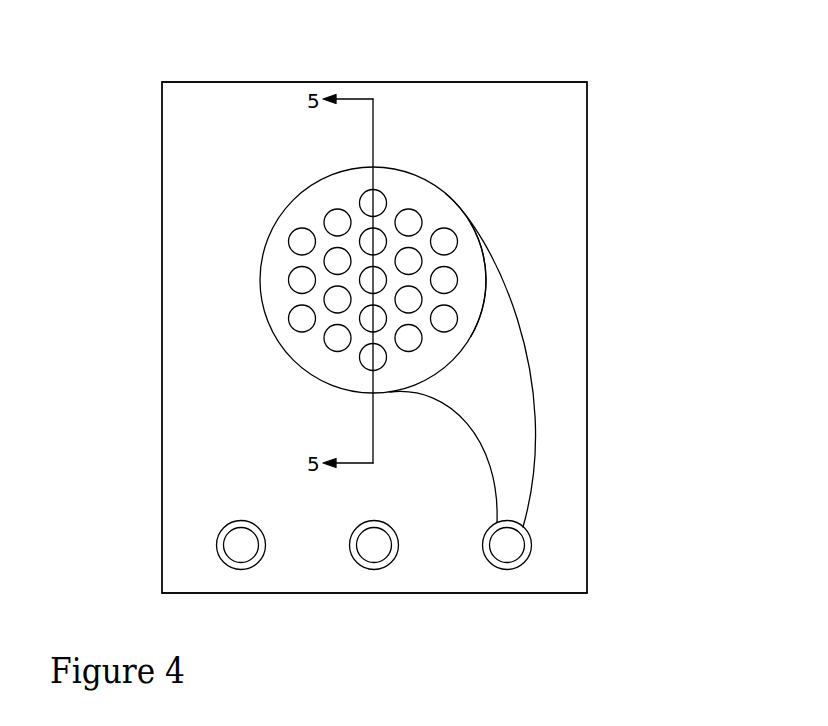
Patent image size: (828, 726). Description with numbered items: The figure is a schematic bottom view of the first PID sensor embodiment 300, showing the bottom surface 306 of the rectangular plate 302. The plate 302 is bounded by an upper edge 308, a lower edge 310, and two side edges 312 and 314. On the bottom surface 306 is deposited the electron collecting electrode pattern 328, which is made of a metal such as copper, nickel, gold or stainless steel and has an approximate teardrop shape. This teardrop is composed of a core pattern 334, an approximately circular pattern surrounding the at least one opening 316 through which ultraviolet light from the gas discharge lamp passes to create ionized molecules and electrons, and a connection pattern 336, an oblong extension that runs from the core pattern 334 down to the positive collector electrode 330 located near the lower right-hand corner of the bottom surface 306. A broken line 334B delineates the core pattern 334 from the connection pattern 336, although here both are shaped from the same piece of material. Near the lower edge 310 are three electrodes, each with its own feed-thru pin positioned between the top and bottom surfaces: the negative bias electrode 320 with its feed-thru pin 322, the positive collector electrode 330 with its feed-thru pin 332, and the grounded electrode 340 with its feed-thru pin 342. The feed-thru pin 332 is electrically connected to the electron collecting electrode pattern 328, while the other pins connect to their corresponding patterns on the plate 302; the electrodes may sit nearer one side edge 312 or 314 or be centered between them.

The first PID sensor embodiment 300 is at (141, 66).
The plate 302 is at (459, 79).
The bottom surface 306 is at (563, 110).
The upper edge 308 is at (213, 82).
The lower edge 310 is at (452, 594).
The side edge 312 is at (587, 348).
The side edge 314 is at (162, 207).
The opening 316 is at (311, 341).
The negative bias electrode 320 is at (216, 543).
The feed-thru pin 322 is at (237, 552).
The electron collecting electrode pattern 328 is at (533, 423).
The positive collector electrode 330 is at (531, 545).
The feed-thru pin 332 is at (513, 548).
The core pattern 334 is at (450, 210).
The broken line 334B is at (488, 299).
The connection pattern 336 is at (520, 473).
The grounded electrode 340 is at (350, 552).
The feed-thru pin 342 is at (375, 553).